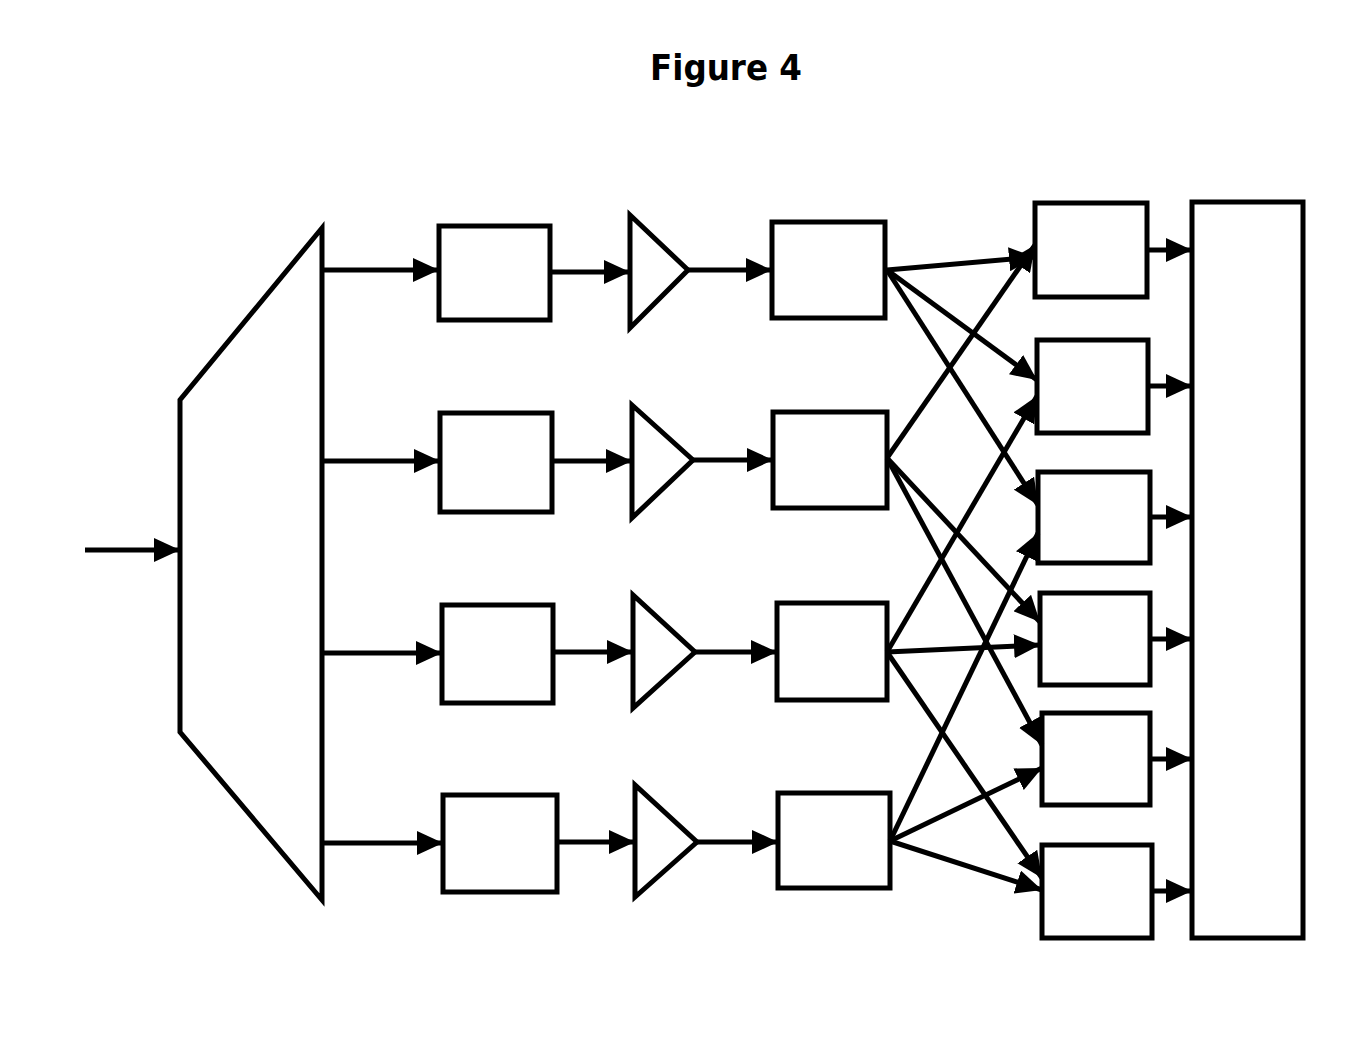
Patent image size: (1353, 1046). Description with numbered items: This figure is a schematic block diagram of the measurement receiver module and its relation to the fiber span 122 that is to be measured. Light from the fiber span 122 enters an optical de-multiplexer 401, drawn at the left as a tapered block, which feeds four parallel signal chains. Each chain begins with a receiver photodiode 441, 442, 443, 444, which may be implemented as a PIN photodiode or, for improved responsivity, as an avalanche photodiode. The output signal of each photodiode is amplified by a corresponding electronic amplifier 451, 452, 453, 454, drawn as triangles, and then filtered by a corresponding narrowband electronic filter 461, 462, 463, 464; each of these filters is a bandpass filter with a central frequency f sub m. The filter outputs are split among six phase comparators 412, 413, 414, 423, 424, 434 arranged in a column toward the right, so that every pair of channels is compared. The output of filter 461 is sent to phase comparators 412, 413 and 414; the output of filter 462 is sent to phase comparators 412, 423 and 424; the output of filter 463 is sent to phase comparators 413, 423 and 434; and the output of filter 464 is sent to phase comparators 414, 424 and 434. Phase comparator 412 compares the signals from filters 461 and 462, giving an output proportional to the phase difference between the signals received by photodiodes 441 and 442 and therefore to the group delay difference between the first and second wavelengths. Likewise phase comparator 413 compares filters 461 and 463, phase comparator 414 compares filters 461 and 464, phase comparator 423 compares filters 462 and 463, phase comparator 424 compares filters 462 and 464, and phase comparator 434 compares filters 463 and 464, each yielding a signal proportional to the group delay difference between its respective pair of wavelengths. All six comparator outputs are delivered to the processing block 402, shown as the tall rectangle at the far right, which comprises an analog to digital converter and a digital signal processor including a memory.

The fiber span 122 is at (132, 575).
The optical de-multiplexer 401 is at (311, 564).
The processing block 402 is at (1247, 570).
The receiver photodiode 441 is at (534, 273).
The receiver photodiode 442 is at (536, 462).
The receiver photodiode 443 is at (537, 654).
The receiver photodiode 444 is at (539, 843).
The electronic amplifier 451 is at (701, 292).
The electronic amplifier 452 is at (702, 481).
The electronic amplifier 453 is at (705, 674).
The electronic amplifier 454 is at (706, 859).
The narrowband electronic filter 461 is at (905, 363).
The narrowband electronic filter 462 is at (907, 495).
The narrowband electronic filter 463 is at (909, 637).
The narrowband electronic filter 464 is at (910, 711).
The phase comparator 412 is at (1113, 250).
The phase comparator 413 is at (1114, 386).
The phase comparator 414 is at (1115, 517).
The phase comparator 423 is at (1116, 639).
The phase comparator 424 is at (1117, 759).
The phase comparator 434 is at (1117, 891).